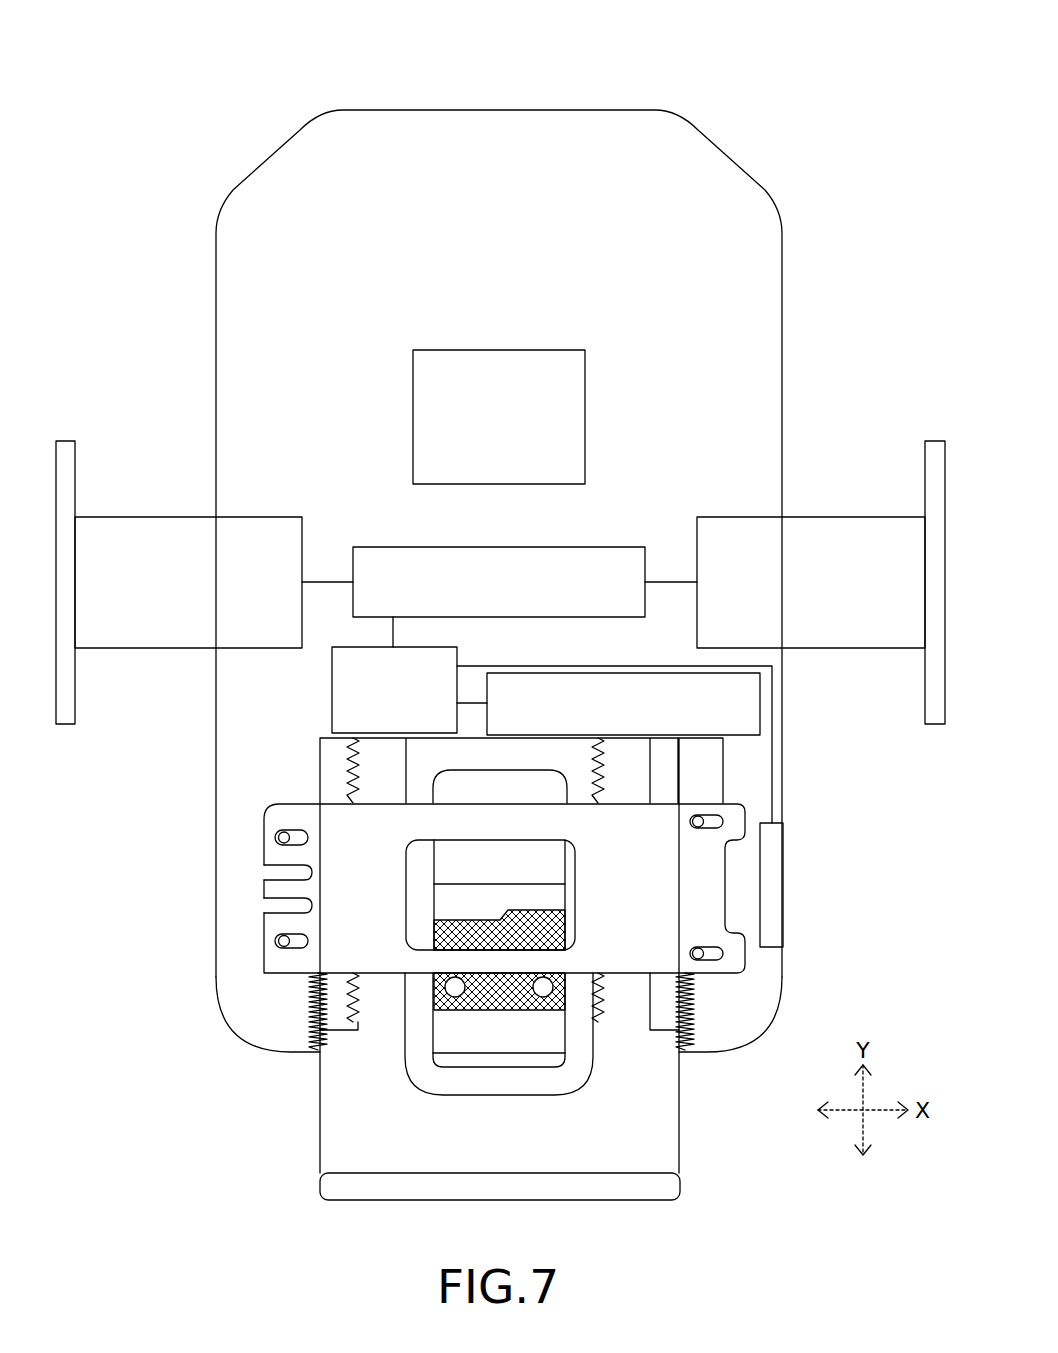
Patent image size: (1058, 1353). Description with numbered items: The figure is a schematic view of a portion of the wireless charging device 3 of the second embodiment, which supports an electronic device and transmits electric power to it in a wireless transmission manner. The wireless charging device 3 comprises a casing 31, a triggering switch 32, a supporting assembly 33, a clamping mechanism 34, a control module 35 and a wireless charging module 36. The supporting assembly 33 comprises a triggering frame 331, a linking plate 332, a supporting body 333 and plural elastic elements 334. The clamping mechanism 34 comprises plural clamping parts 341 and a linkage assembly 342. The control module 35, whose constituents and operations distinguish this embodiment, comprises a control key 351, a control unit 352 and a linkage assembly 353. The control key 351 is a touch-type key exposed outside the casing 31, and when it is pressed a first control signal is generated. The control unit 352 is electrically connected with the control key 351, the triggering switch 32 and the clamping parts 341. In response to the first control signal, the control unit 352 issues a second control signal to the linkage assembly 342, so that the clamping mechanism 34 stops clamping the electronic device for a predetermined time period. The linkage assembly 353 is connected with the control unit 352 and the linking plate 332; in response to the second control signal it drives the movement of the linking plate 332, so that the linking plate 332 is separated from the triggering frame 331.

The wireless charging device 3 is at (728, 25).
The casing 31 is at (763, 370).
The triggering switch 32 is at (553, 910).
The supporting assembly 33 is at (447, 974).
The triggering frame 331 is at (272, 873).
The linking plate 332 is at (337, 825).
The supporting body 333 is at (325, 1112).
The second elastic member 334 is at (313, 1028).
The clamping mechanism 34 is at (500, 582).
The clamping part 341 is at (160, 630).
The linkage assembly 342 is at (578, 553).
The control module 35 is at (565, 779).
The control key 351 is at (772, 892).
The control unit 352 is at (340, 705).
The linkage assembly 353 is at (703, 678).
The wireless charging module 36 is at (528, 366).